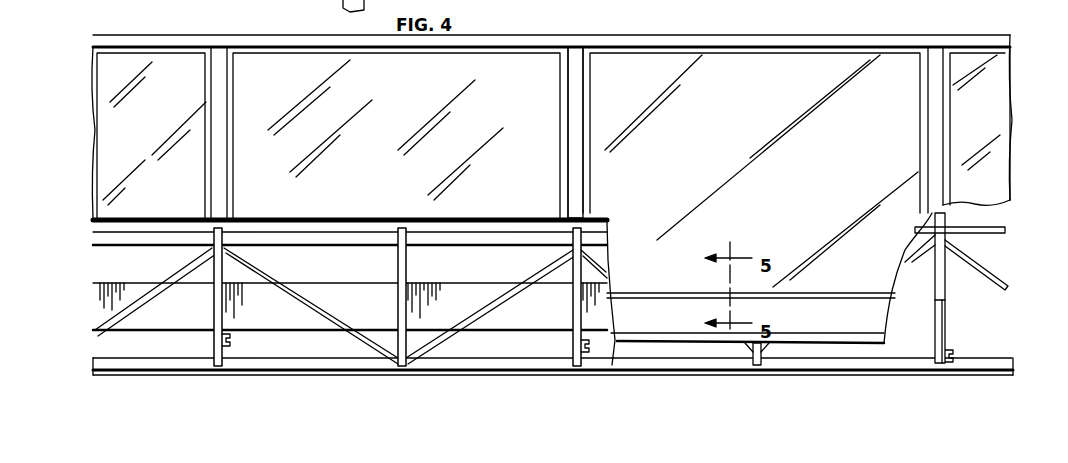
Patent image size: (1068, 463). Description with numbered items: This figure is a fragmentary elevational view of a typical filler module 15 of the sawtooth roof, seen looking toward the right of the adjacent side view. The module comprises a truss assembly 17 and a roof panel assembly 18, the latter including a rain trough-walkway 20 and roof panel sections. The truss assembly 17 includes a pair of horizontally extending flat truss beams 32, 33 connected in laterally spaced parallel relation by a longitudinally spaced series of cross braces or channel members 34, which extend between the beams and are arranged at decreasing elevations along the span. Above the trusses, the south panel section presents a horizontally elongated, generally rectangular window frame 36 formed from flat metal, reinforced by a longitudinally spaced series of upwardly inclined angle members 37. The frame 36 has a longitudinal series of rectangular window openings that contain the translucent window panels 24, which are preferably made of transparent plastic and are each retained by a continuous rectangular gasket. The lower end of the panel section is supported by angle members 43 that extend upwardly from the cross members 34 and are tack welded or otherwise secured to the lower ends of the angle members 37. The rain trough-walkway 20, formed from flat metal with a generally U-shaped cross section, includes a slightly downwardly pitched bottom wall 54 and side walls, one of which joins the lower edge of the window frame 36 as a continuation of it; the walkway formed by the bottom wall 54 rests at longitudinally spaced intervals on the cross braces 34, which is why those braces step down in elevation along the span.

The filler module 15 is at (690, 33).
The truss assembly 17 is at (614, 262).
The roof panel assembly 18 is at (1015, 112).
The rain trough-walkway 20 is at (813, 336).
The translucent window panel 24 is at (163, 112).
The truss beam 32 is at (95, 372).
The truss beam 33 is at (990, 357).
The cross braces 34 is at (228, 338).
The window frame 36 is at (566, 47).
The angle members 37 is at (942, 262).
The angle members 43 is at (947, 320).
The bottom wall 54 is at (838, 348).